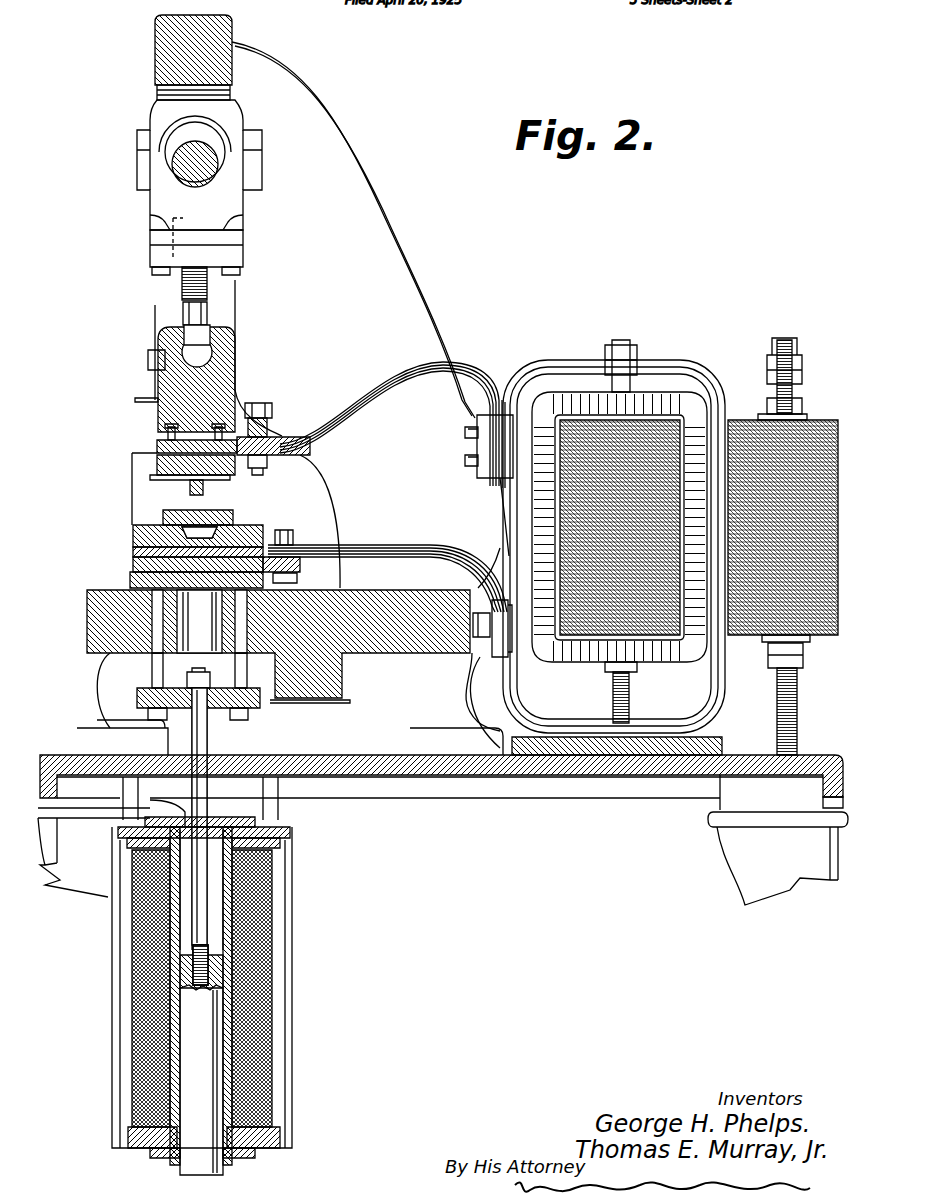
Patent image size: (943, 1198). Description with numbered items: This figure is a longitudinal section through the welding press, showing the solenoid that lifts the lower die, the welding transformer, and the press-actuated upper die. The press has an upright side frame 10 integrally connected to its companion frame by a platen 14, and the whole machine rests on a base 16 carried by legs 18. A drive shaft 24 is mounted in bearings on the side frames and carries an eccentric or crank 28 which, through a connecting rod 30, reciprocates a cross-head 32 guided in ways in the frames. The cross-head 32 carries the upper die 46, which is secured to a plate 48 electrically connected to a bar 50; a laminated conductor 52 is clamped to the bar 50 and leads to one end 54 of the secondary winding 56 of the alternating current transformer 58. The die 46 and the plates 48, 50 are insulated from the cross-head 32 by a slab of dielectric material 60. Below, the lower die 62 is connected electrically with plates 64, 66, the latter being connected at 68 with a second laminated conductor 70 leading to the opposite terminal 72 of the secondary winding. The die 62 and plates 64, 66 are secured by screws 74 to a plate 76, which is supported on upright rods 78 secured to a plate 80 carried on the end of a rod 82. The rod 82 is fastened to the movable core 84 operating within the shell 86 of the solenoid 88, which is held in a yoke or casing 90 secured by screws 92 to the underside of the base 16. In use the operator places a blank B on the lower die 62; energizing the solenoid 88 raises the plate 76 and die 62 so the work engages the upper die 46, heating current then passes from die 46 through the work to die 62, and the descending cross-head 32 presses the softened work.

The upright side frame 10 is at (462, 243).
The platen 14 is at (90, 629).
The base 16 is at (448, 790).
The legs 18 is at (73, 900).
The drive shaft 24 is at (180, 166).
The eccentric or crank 28 is at (178, 126).
The connecting rod 30 is at (150, 240).
The cross-head 32 is at (213, 380).
The upper die 46 is at (165, 482).
The plate 48 is at (150, 460).
The bar 50 is at (308, 448).
The laminated conductor 52 is at (300, 430).
The end of secondary winding 54 is at (507, 490).
The secondary winding 56 is at (568, 370).
The alternating current transformer 58 is at (780, 546).
The slab of dielectric material 60 is at (190, 437).
The lower die 62 is at (135, 545).
The plate 64 is at (135, 557).
The plate 66 is at (130, 567).
The connection 68 is at (285, 546).
The laminated conductor 70 is at (387, 560).
The opposite terminal 72 is at (500, 552).
The screws 74 is at (140, 537).
The plate 76 is at (130, 585).
The upright rods 78 is at (150, 672).
The plate 80 is at (137, 700).
The rod 82 is at (212, 732).
The movable core 84 is at (225, 1003).
The shell 86 is at (272, 898).
The solenoid 88 is at (235, 928).
The yoke or casing 90 is at (293, 860).
The screws 92 is at (280, 822).
The blank B is at (165, 516).